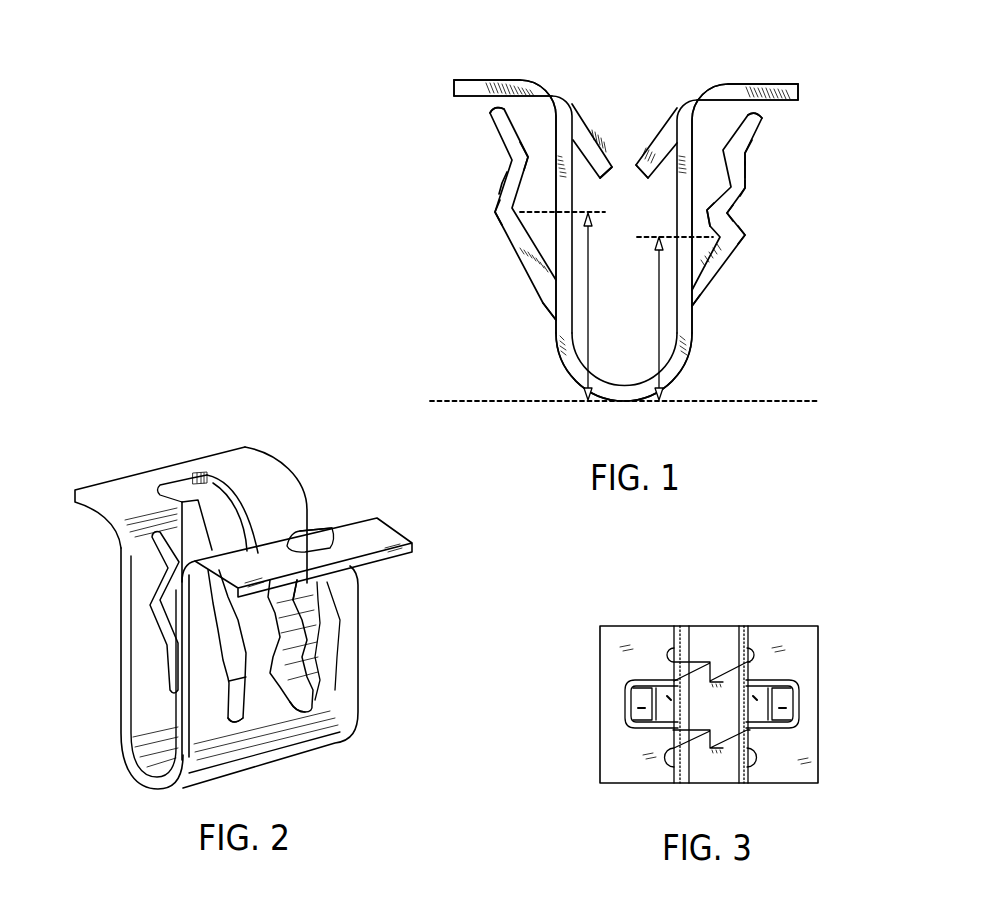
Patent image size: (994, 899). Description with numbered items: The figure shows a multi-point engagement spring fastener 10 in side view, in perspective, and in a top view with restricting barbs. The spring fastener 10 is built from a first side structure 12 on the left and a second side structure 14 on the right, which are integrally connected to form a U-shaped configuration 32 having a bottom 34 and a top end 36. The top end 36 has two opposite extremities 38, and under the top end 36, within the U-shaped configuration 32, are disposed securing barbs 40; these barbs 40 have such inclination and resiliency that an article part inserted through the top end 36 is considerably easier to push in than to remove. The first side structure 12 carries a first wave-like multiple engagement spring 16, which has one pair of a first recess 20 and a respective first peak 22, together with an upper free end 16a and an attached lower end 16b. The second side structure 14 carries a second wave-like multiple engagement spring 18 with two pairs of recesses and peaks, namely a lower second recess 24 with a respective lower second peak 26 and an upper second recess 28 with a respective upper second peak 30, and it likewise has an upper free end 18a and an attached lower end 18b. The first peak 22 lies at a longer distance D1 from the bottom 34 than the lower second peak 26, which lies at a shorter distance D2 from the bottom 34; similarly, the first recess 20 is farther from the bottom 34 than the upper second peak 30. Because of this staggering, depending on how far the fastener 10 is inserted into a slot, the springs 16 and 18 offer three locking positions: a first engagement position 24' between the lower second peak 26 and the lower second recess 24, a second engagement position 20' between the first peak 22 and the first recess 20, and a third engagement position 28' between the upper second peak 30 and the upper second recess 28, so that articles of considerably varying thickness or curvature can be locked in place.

In FIG. 1, the spring fastener 10 is at (376, 141).
In FIG. 1, the first side structure 12 is at (455, 262).
In FIG. 1, the second side structure 14 is at (797, 275).
In FIG. 1, the first wave-like multiple engagement spring 16 is at (528, 264).
In FIG. 2, the first wave-like multiple engagement spring 16 is at (172, 612).
In FIG. 3, the first wave-like multiple engagement spring 16 is at (651, 704).
In FIG. 1, the upper free end 16a is at (487, 113).
In FIG. 2, the upper free end 16a is at (192, 502).
In FIG. 1, the attached lower end 16b is at (543, 300).
In FIG. 2, the attached lower end 16b is at (227, 702).
In FIG. 1, the second wave-like multiple engagement spring 18 is at (712, 276).
In FIG. 2, the second wave-like multiple engagement spring 18 is at (302, 658).
In FIG. 3, the second wave-like multiple engagement spring 18 is at (772, 704).
In FIG. 1, the upper free end 18a is at (757, 116).
In FIG. 2, the upper free end 18a is at (320, 584).
In FIG. 1, the attached lower end 18b is at (694, 306).
In FIG. 2, the attached lower end 18b is at (280, 723).
In FIG. 1, the first recess 20 is at (474, 156).
In FIG. 1, the second engagement position 20' is at (463, 187).
In FIG. 1, the first peak 22 is at (495, 208).
In FIG. 1, the lower second recess 24 is at (758, 219).
In FIG. 1, the first engagement position 24' is at (757, 230).
In FIG. 1, the lower second peak 26 is at (738, 234).
In FIG. 1, the upper second recess 28 is at (776, 149).
In FIG. 1, the third engagement position 28' is at (787, 172).
In FIG. 1, the upper second peak 30 is at (746, 189).
In FIG. 1, the U-shaped configuration 32 is at (738, 421).
In FIG. 1, the bottom 34 is at (627, 401).
In FIG. 2, the bottom 34 is at (285, 763).
In FIG. 1, the top end 36 is at (487, 83).
In FIG. 2, the top end 36 is at (112, 493).
In FIG. 3, the top end 36 is at (637, 640).
In FIG. 1, the opposite extremities 38 is at (627, 103).
In FIG. 2, the opposite extremities 38 is at (327, 515).
In FIG. 3, the opposite extremities 38 is at (717, 633).
In FIG. 1, the securing barbs 40 is at (585, 122).
In FIG. 2, the securing barbs 40 is at (182, 545).
In FIG. 1, the distance D1 is at (585, 325).
In FIG. 1, the distance D2 is at (657, 278).